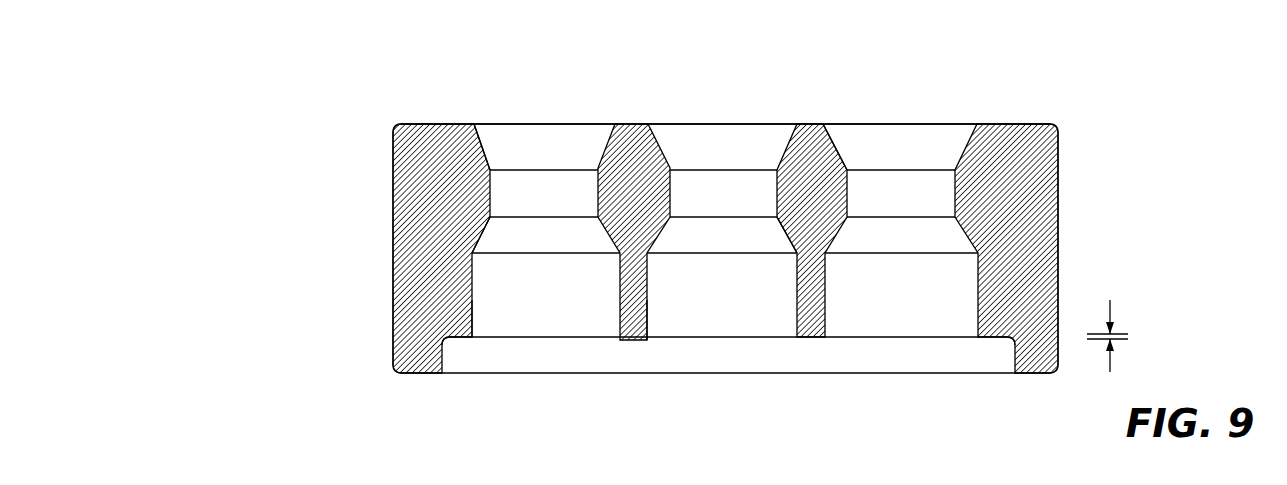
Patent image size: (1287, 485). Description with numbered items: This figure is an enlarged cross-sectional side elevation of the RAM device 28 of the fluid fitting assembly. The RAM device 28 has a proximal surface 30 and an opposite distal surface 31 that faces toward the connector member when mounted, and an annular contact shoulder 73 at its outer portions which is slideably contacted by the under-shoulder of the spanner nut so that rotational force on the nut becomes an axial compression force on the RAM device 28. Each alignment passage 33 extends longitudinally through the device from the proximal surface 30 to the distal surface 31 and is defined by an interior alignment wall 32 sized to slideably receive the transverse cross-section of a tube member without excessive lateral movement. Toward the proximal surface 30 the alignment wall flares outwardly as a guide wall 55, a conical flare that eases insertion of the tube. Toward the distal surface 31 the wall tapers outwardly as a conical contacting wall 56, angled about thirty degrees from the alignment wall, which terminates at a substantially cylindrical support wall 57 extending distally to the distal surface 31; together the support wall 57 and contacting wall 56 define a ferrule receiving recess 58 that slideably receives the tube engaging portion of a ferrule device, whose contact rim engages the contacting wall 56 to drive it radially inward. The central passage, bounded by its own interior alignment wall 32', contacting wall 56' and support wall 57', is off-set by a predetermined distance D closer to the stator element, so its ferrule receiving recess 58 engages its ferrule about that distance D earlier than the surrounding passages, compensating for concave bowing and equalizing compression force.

The RAM device 28 is at (388, 246).
The proximal surface 30 is at (462, 124).
The distal surface 31 is at (980, 339).
The interior alignment wall 32 is at (631, 190).
The interior alignment wall 32' is at (761, 203).
The alignment passage 33 is at (560, 187).
The guide wall 55 is at (483, 152).
The contacting wall 56 is at (521, 317).
The contacting wall 56' is at (785, 325).
The support wall 57 is at (492, 370).
The support wall 57' is at (670, 366).
The ferrule receiving recess 58 is at (543, 301).
The annular contact shoulder 73 is at (433, 124).
The predetermined distance D is at (1110, 313).